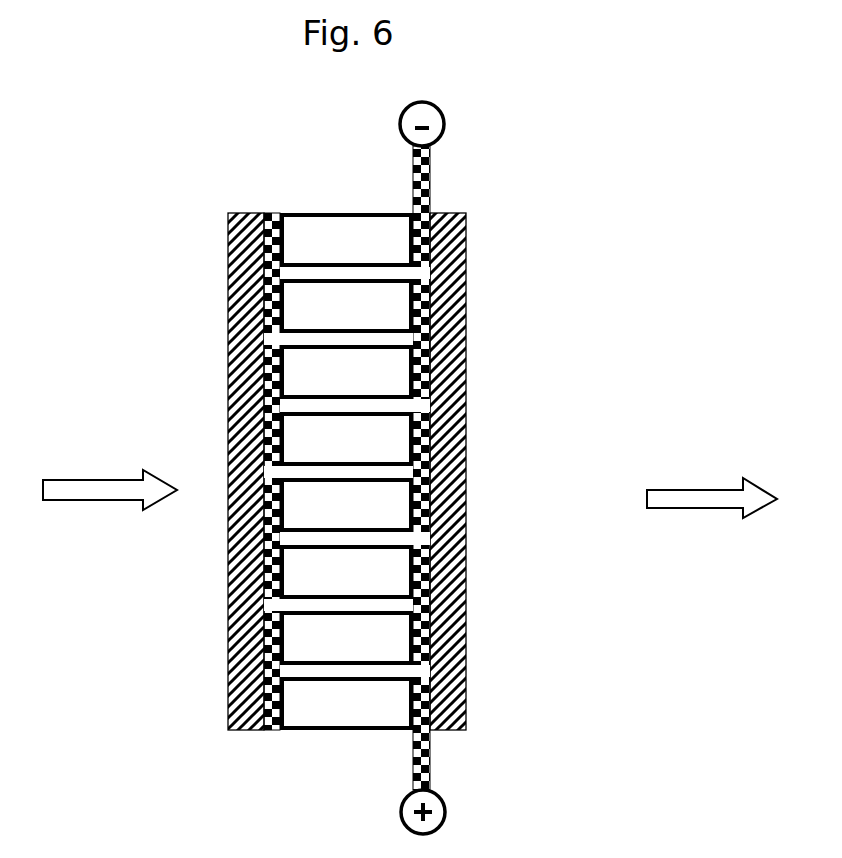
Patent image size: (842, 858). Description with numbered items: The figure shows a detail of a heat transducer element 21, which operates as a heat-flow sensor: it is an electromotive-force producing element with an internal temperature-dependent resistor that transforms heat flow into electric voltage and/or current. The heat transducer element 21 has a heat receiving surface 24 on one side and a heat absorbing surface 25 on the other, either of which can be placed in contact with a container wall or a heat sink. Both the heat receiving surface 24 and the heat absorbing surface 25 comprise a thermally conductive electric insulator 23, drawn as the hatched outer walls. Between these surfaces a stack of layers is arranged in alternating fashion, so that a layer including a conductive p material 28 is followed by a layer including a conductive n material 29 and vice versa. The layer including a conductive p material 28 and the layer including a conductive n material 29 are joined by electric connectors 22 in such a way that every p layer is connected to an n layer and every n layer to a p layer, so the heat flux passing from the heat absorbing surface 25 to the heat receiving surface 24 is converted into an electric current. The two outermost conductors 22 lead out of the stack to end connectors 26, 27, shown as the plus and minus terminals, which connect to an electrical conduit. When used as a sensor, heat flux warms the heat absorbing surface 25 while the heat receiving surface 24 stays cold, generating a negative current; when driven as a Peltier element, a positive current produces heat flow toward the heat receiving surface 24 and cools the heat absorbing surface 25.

The heat transducer element 21 is at (528, 202).
The electric connector 22 is at (263, 243).
The thermally conductive electric insulator 23 is at (250, 443).
The heat receiving surface 24 is at (447, 283).
The heat absorbing surface 25 is at (243, 365).
The end connector 26 is at (433, 810).
The end connector 27 is at (400, 121).
The layer including a conductive p material 28 is at (393, 321).
The layer including a conductive n material 29 is at (393, 254).